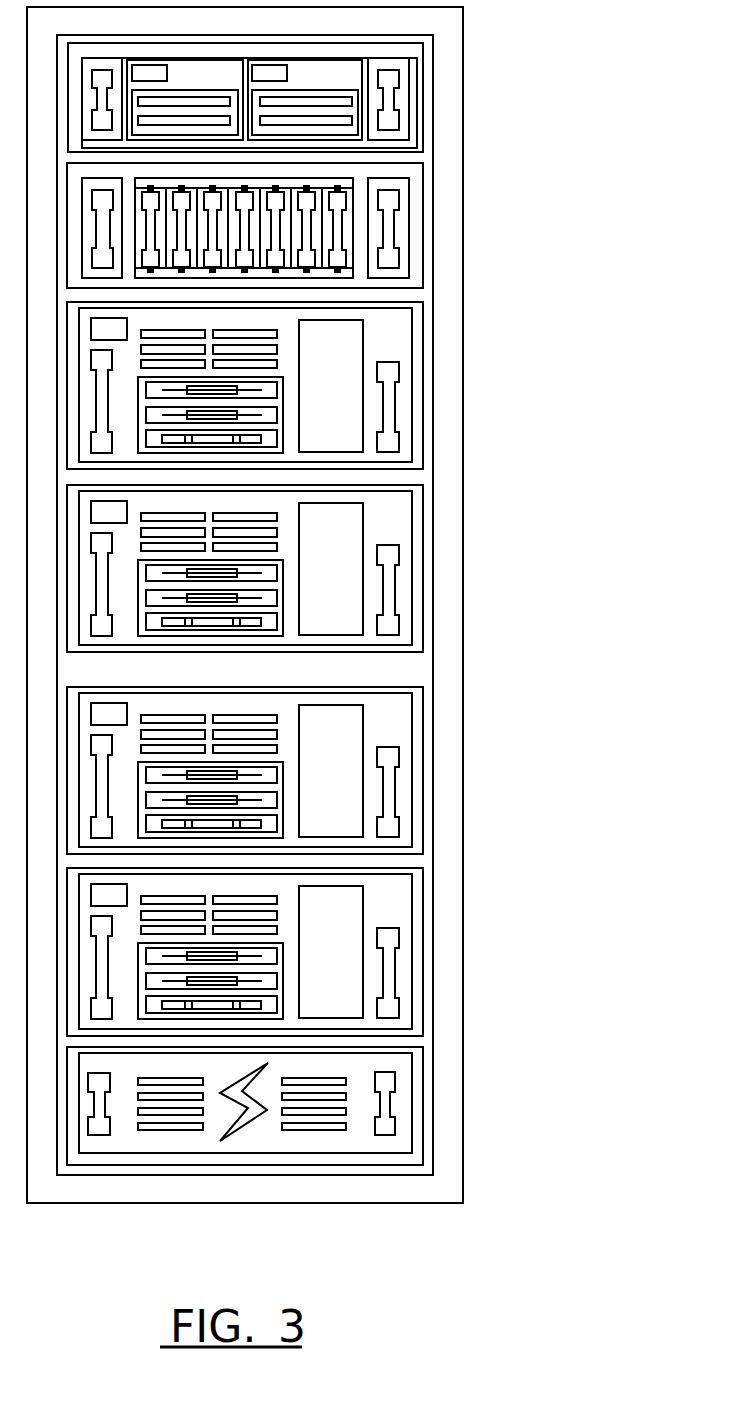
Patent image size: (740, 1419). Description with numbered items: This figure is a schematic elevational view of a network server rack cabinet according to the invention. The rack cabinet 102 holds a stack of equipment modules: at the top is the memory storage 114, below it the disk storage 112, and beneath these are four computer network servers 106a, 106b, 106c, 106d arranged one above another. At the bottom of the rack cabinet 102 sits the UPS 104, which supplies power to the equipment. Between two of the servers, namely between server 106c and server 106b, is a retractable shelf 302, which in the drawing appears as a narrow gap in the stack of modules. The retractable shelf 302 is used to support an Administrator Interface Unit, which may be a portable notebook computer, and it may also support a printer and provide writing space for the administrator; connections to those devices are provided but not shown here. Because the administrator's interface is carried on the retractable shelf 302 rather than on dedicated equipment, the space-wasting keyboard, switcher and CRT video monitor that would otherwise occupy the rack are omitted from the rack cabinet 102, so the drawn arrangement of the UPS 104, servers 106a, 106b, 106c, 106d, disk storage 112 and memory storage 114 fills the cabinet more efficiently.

The rack cabinet 102 is at (463, 820).
The UPS 104 is at (395, 1100).
The computer network server 106a is at (393, 940).
The computer network server 106b is at (397, 757).
The computer network server 106c is at (390, 530).
The computer network server 106d is at (392, 347).
The disk storage 112 is at (400, 217).
The memory storage 114 is at (401, 95).
The retractable shelf 302 is at (390, 670).